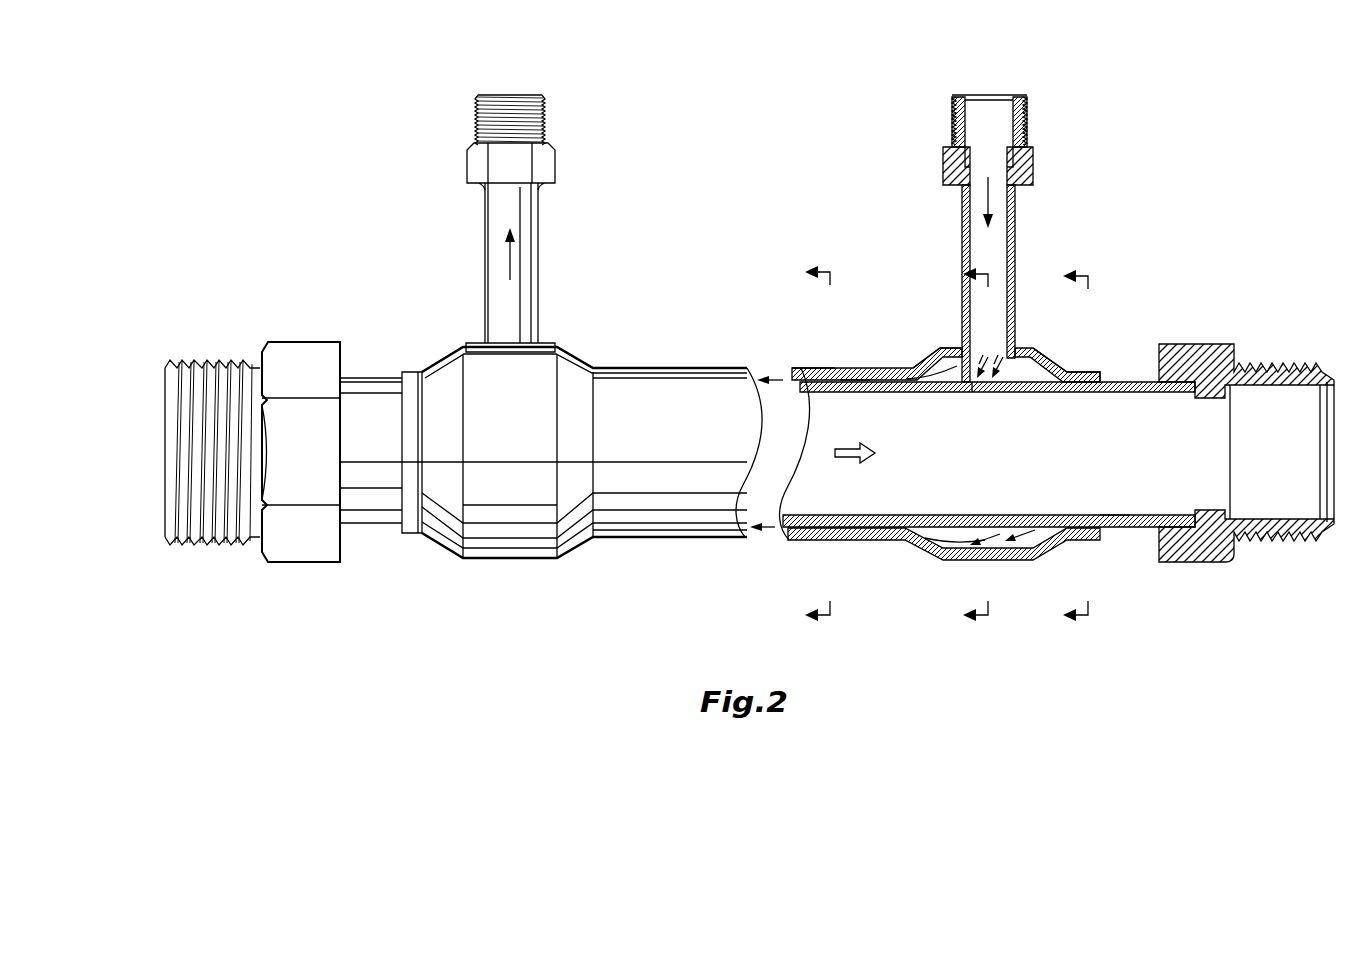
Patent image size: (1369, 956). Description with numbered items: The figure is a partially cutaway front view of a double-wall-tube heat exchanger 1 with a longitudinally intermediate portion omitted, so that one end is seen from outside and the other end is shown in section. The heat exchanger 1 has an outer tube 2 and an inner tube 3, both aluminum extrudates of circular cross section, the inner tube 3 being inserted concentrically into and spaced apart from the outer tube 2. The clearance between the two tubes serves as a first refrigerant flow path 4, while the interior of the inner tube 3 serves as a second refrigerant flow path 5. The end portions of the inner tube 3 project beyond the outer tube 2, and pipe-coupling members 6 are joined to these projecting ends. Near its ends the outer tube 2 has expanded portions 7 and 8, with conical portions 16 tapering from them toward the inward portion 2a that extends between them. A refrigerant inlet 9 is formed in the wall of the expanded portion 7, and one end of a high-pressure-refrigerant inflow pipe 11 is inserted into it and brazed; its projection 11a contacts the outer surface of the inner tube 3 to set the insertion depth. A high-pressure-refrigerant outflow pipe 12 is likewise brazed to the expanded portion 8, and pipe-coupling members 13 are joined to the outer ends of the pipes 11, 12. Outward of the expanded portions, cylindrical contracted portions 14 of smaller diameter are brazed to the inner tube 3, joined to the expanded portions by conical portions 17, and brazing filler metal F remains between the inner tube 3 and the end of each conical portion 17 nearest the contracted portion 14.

The double-wall-tube heat exchanger 1 is at (1166, 187).
The outer tube 2 is at (802, 368).
The portion located inward of the expanded portions 2a is at (831, 368).
The inner tube 3 is at (803, 541).
The first refrigerant flow path 4 is at (857, 368).
The second refrigerant flow path 5 is at (1113, 527).
The pipe-coupling member 6 is at (298, 358).
The expanded portion 7 is at (952, 350).
The expanded portion 8 is at (543, 347).
The refrigerant inlet 9 is at (1008, 345).
The high-pressure-refrigerant inflow pipe 11 is at (1015, 213).
The projection 11a is at (973, 393).
The high-pressure-refrigerant outflow pipe 12 is at (495, 243).
The pipe-coupling member 13 is at (478, 164).
The contracted portion 14 is at (412, 372).
The conical portion 16 is at (578, 357).
The conical portion 17 is at (447, 350).
The brazing filler metal F is at (1062, 541).